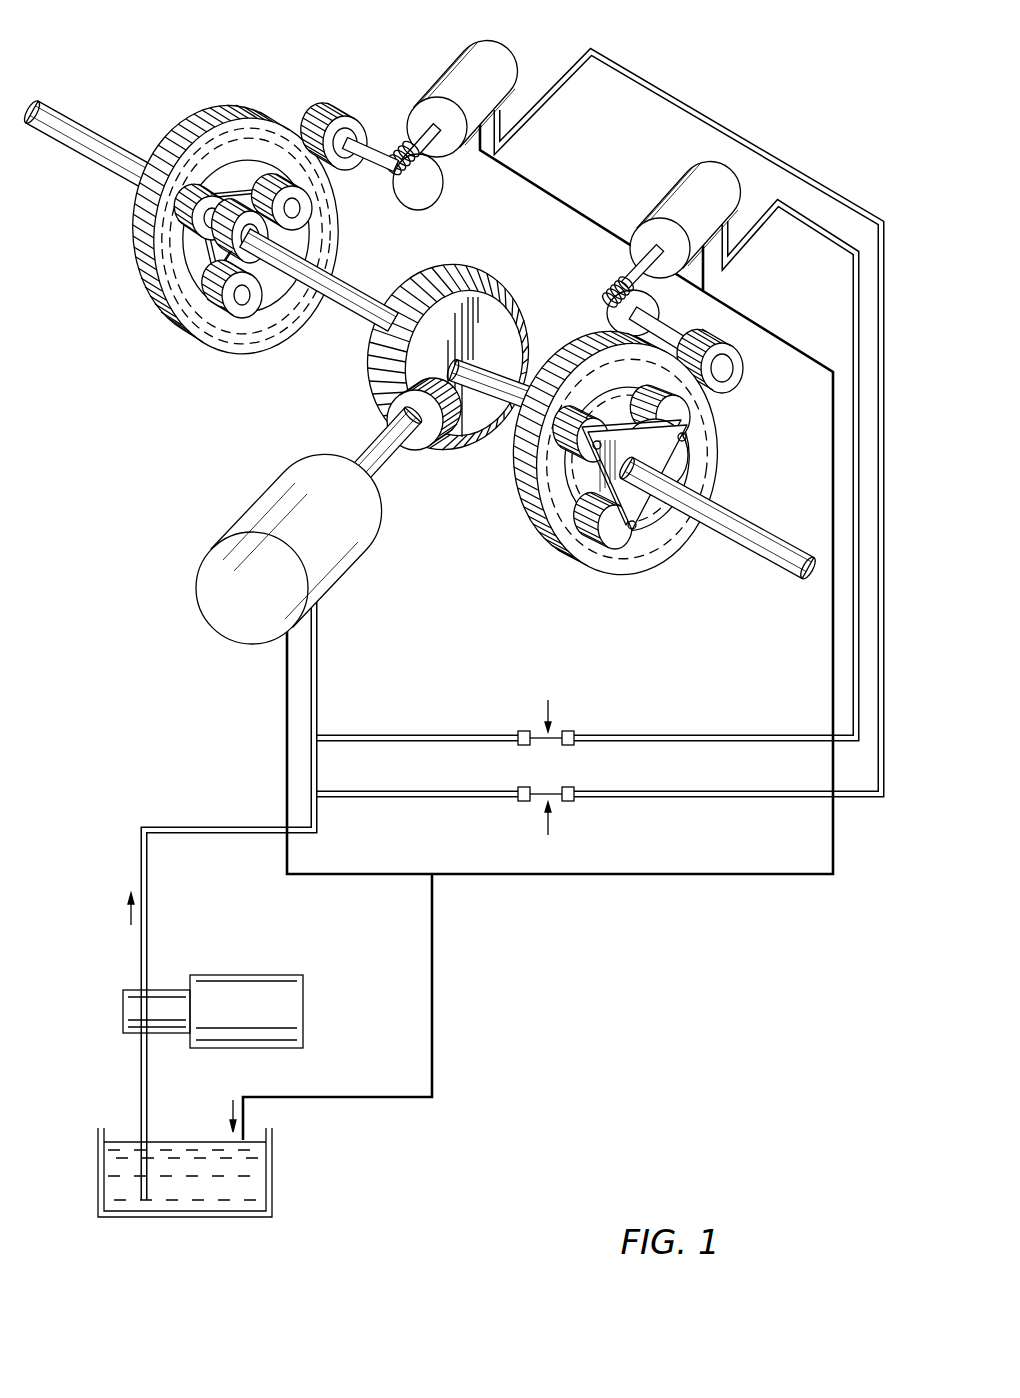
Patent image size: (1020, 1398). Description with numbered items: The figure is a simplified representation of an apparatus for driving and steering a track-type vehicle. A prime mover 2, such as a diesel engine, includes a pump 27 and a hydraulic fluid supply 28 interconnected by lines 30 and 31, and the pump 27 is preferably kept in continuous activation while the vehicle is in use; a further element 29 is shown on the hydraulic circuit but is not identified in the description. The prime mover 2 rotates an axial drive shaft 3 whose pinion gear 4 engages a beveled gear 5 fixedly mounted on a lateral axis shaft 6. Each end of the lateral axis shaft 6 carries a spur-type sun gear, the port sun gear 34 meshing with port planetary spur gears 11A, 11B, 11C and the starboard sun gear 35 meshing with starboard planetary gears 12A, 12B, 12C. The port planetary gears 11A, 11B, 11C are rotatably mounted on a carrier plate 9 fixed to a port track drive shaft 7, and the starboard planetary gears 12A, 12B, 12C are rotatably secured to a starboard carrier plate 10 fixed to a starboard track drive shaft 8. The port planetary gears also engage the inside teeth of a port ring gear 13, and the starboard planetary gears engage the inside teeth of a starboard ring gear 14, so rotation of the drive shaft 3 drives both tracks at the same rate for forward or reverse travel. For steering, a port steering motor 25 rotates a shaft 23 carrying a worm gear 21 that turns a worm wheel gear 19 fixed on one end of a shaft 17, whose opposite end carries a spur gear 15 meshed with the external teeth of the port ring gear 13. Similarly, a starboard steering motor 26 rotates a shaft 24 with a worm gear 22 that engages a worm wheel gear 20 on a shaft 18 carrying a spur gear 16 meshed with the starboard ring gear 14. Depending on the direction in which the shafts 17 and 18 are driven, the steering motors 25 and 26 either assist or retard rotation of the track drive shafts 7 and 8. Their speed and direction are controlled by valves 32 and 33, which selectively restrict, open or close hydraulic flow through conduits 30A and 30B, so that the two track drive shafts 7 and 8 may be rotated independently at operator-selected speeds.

The prime mover 2 is at (258, 497).
The axial drive shaft 3 is at (372, 442).
The pinion gear 4 is at (427, 442).
The beveled gear 5 is at (475, 267).
The lateral axis shaft 6 is at (355, 288).
The port track drive shaft 7 is at (70, 122).
The starboard track drive shaft 8 is at (758, 523).
The carrier plate 9 is at (233, 180).
The starboard carrier plate 10 is at (667, 452).
The port planetary spur gear 11A is at (227, 317).
The port planetary spur gear 11B is at (200, 232).
The port planetary spur gear 11C is at (283, 167).
The starboard planetary gear 12A is at (610, 530).
The starboard planetary gear 12B is at (690, 410).
The starboard planetary gear 12C is at (565, 468).
The port ring gear 13 is at (242, 352).
The starboard ring gear 14 is at (637, 567).
The spur gear 15 is at (327, 102).
The spur gear 16 is at (720, 330).
The shaft 17 is at (370, 150).
The shaft 18 is at (673, 327).
The worm wheel gear 19 is at (418, 194).
The worm wheel gear 20 is at (607, 313).
The worm gear 21 is at (397, 147).
The worm gear 22 is at (622, 287).
The shaft 23 is at (443, 155).
The shaft 24 is at (648, 250).
The port steering motor 25 is at (462, 57).
The starboard steering motor 26 is at (686, 187).
The pump 27 is at (260, 975).
The hydraulic fluid supply 28 is at (273, 1180).
The suction line 29 is at (140, 1093).
The line 30 is at (213, 827).
The conduit 30A is at (632, 73).
The conduit 30B is at (811, 223).
The line 31 is at (537, 190).
The valve 32 is at (567, 730).
The valve 33 is at (577, 807).
The port sun gear 34 is at (213, 253).
The starboard sun gear 35 is at (618, 418).